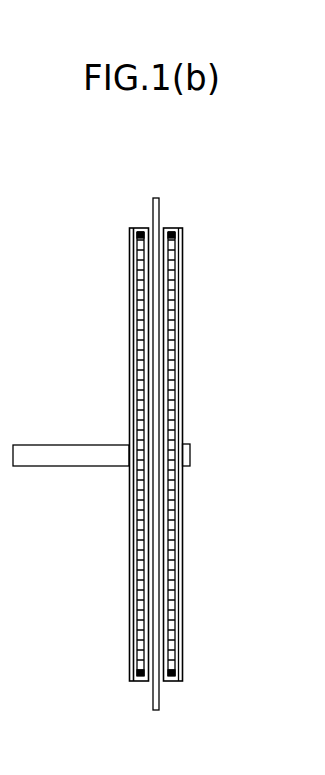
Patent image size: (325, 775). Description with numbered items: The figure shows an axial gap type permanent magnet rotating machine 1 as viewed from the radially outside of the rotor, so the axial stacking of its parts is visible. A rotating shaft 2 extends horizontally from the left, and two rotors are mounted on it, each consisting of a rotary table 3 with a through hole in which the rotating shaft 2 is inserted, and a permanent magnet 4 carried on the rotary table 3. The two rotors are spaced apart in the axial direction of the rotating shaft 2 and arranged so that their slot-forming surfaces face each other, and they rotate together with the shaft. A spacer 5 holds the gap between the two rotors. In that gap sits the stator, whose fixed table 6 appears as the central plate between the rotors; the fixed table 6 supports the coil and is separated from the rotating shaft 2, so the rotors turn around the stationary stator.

The axial gap type permanent magnet rotating machine 1 is at (90, 213).
The rotating shaft 2 is at (55, 452).
The rotary table 3 is at (130, 227).
The permanent magnet 4 is at (139, 684).
The spacer 5 is at (165, 363).
The fixed table 6 is at (152, 200).